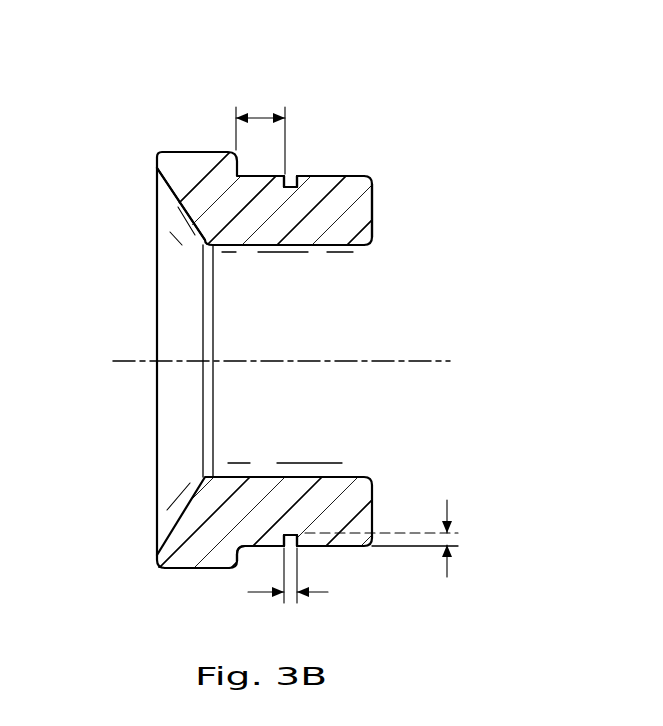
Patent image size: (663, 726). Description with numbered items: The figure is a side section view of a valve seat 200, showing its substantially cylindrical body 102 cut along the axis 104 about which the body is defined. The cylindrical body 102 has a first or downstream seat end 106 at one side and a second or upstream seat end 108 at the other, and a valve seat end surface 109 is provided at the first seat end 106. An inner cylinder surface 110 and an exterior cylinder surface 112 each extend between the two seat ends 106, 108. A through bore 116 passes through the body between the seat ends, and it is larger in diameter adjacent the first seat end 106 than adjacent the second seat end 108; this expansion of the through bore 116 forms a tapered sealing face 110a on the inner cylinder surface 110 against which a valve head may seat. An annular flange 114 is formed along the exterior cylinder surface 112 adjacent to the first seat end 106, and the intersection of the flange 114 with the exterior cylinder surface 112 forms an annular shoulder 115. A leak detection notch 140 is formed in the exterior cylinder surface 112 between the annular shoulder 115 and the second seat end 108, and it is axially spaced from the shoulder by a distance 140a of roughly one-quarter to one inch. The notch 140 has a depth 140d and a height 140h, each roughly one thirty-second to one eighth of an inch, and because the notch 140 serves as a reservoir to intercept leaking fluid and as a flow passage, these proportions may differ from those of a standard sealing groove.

The valve seat 200 is at (357, 86).
The cylindrical body 102 is at (362, 202).
The axis 104 is at (125, 358).
The first or downstream seat end 106 is at (158, 560).
The second or upstream seat end 108 is at (372, 240).
The valve seat end surface 109 is at (158, 463).
The inner cylinder surface 110 is at (250, 247).
The tapered sealing face 110a is at (183, 205).
The exterior cylinder surface 112 is at (347, 175).
The annular flange 114 is at (182, 578).
The annular shoulder 115 is at (243, 556).
The through bore 116 is at (228, 392).
The leak detection notch 140 is at (290, 196).
The distance 140a is at (262, 116).
The height 140h is at (328, 592).
The depth 140d is at (447, 577).